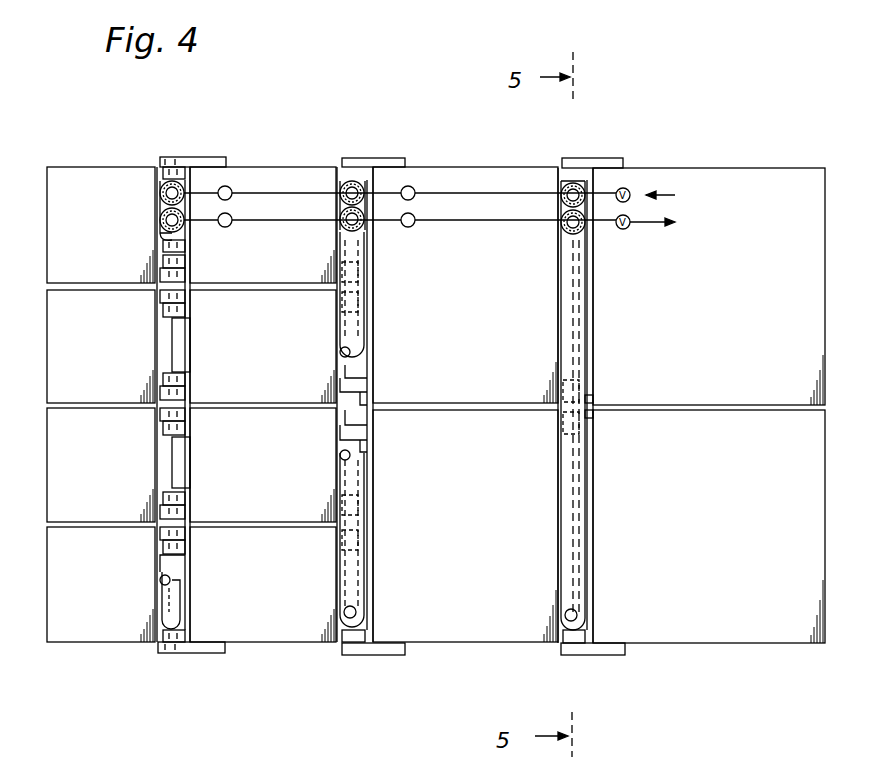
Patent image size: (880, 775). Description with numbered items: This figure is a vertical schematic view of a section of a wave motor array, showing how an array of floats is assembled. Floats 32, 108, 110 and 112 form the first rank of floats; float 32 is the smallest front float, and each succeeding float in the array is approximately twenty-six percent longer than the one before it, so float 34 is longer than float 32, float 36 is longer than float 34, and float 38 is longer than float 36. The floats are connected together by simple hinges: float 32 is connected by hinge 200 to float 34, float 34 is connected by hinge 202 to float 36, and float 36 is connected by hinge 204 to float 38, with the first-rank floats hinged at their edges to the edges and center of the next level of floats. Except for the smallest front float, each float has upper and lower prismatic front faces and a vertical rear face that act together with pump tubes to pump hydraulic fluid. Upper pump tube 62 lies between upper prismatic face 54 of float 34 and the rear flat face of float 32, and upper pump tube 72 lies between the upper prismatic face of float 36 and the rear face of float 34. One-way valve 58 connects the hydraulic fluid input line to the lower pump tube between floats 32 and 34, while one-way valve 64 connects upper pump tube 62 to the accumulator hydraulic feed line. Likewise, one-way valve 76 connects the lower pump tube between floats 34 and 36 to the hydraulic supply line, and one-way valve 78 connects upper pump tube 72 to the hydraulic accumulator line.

The float 32 is at (114, 224).
The float 34 is at (290, 251).
The float 36 is at (479, 307).
The float 38 is at (714, 307).
The upper prismatic face 54 is at (184, 347).
The one-way valve 58 is at (229, 186).
The upper pump tube 62 is at (181, 592).
The one-way valve 64 is at (224, 227).
The upper pump tube 72 is at (356, 335).
The one-way valve 76 is at (411, 186).
The one-way valve 78 is at (407, 227).
The float 108 is at (118, 356).
The float 110 is at (118, 474).
The float 112 is at (118, 591).
The hinge 200 is at (173, 155).
The hinge 202 is at (357, 157).
The hinge 204 is at (572, 157).